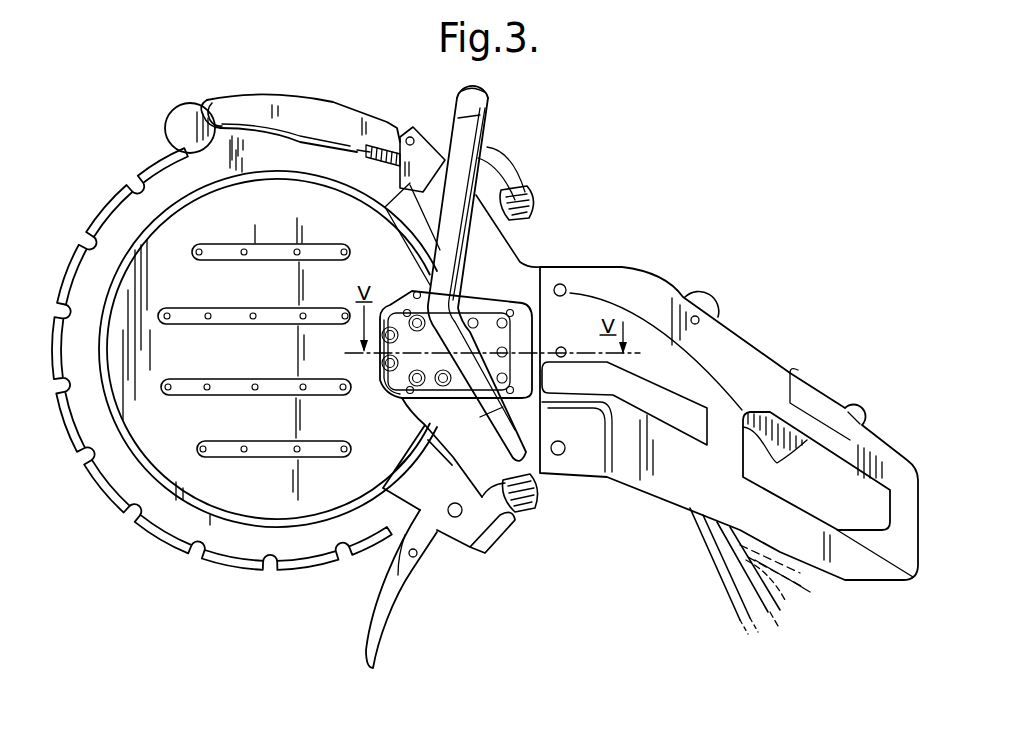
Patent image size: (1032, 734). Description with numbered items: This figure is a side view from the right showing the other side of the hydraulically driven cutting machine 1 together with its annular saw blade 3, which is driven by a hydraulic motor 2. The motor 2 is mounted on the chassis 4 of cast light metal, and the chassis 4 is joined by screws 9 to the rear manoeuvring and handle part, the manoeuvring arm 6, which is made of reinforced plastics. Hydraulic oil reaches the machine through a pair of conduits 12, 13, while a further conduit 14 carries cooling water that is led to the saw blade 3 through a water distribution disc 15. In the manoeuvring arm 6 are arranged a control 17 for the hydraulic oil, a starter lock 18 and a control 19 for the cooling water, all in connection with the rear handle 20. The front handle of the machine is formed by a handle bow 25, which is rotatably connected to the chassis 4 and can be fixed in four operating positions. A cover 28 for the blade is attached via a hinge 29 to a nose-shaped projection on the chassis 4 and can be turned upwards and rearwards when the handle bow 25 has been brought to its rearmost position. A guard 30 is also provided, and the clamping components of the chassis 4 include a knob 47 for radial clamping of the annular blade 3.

The cutting machine 1 is at (568, 219).
The hydraulic motor 2 is at (497, 290).
The annular saw blade 3 is at (197, 527).
The chassis 4 is at (517, 290).
The manoeuvring arm 6 is at (757, 342).
The screws 9 is at (565, 287).
The conduit for hydraulic oil 12 is at (720, 568).
The conduit for hydraulic oil 13 is at (775, 605).
The conduit for cooling water 14 is at (790, 588).
The water distribution disc 15 is at (165, 450).
The control for the hydraulic oil 17 is at (787, 445).
The starter lock 18 is at (848, 404).
The control for cooling water 19 is at (710, 300).
The rear handle 20 is at (793, 400).
The handle bow 25 is at (467, 137).
The blade cover 28 is at (310, 112).
The hinge 29 is at (411, 137).
The guard 30 is at (380, 613).
The knob 47 is at (522, 193).